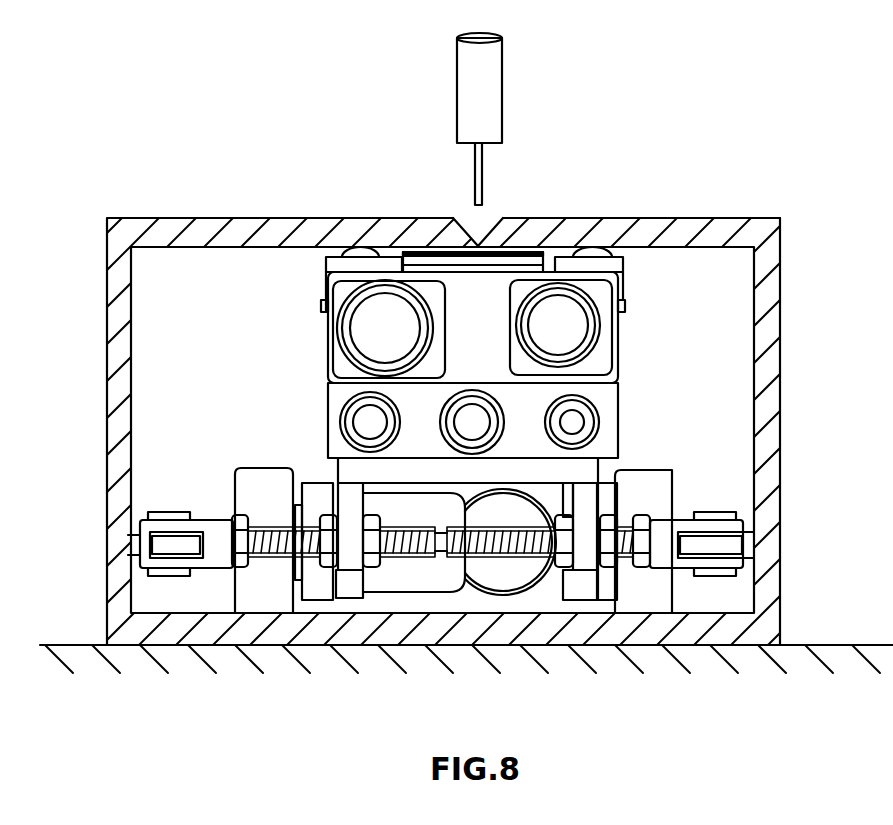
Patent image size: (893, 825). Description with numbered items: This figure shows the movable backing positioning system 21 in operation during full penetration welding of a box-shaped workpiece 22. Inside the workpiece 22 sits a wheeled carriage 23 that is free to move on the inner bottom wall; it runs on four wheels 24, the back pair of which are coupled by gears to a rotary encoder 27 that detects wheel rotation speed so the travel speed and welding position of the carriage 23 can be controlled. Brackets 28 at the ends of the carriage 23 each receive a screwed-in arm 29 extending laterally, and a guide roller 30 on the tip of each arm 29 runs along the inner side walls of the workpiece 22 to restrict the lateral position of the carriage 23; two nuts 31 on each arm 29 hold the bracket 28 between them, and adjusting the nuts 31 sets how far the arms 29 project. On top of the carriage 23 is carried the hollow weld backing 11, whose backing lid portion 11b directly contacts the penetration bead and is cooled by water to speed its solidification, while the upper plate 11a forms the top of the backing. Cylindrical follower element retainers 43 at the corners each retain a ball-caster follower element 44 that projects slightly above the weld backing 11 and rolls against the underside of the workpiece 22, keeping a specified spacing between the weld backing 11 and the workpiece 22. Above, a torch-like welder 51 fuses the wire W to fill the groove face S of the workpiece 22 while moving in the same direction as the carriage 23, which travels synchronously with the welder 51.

The weld backing 11 is at (413, 248).
The holder top plate 11a is at (555, 262).
The backing lid portion 11b is at (530, 262).
The movable backing positioning system 21 is at (802, 318).
The box-shaped workpiece 22 is at (738, 233).
The wheeled carriage 23 is at (603, 466).
The wheels 24 is at (253, 600).
The rotary encoder 27 is at (445, 586).
The brackets 28 is at (348, 578).
The arm 29 is at (410, 558).
The guide roller 30 is at (140, 542).
The nuts 31 is at (328, 568).
The follower element retainers 43 is at (326, 270).
The follower element 44 is at (358, 251).
The welder 51 is at (502, 70).
The groove face S is at (475, 236).
The wire W is at (482, 180).